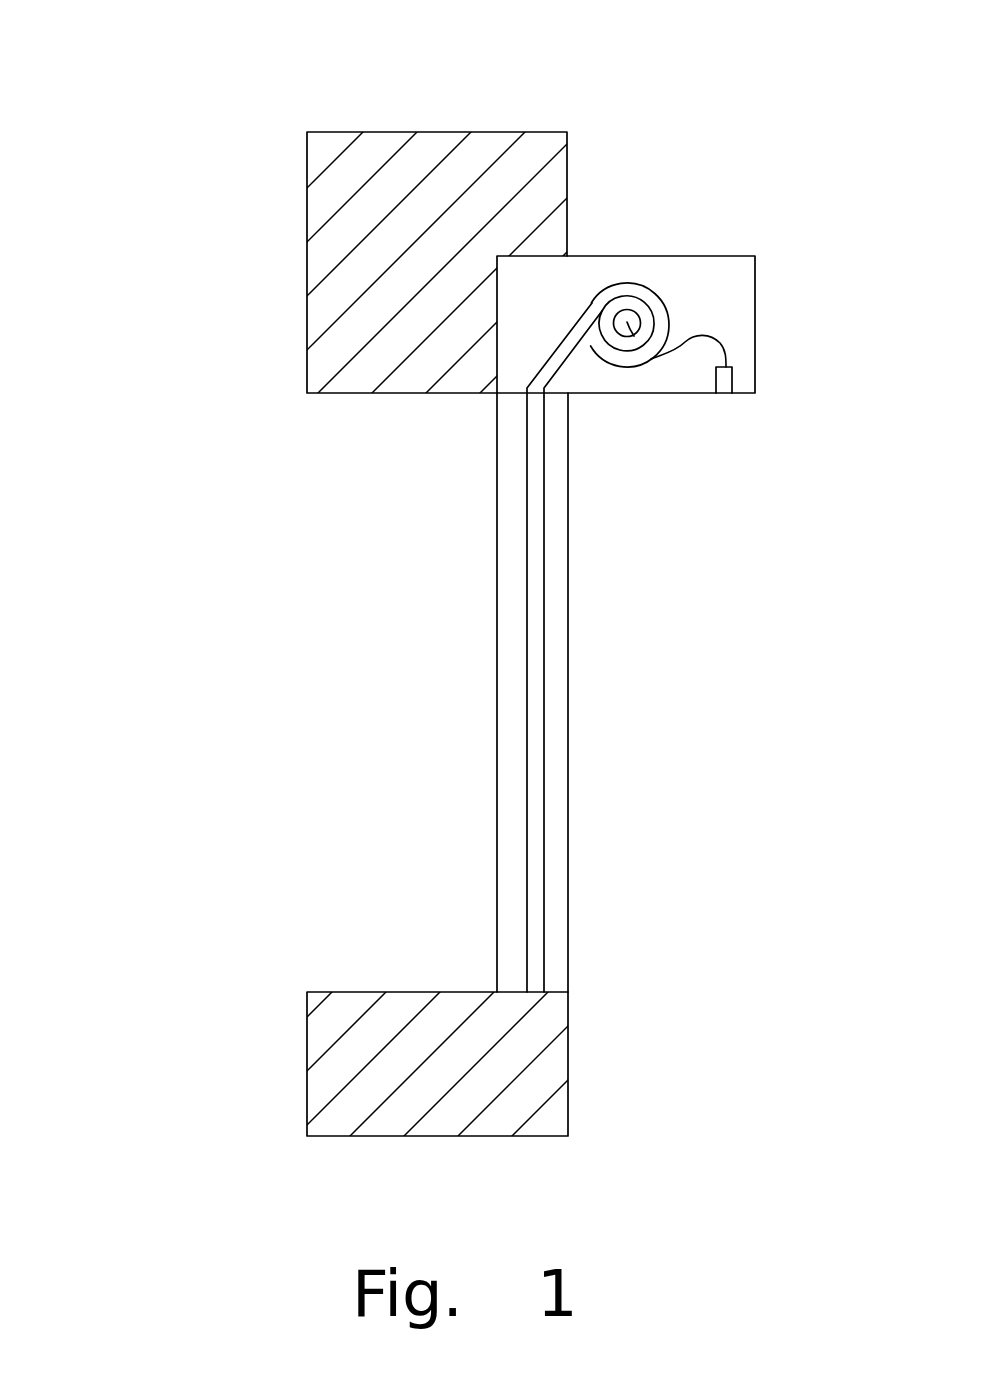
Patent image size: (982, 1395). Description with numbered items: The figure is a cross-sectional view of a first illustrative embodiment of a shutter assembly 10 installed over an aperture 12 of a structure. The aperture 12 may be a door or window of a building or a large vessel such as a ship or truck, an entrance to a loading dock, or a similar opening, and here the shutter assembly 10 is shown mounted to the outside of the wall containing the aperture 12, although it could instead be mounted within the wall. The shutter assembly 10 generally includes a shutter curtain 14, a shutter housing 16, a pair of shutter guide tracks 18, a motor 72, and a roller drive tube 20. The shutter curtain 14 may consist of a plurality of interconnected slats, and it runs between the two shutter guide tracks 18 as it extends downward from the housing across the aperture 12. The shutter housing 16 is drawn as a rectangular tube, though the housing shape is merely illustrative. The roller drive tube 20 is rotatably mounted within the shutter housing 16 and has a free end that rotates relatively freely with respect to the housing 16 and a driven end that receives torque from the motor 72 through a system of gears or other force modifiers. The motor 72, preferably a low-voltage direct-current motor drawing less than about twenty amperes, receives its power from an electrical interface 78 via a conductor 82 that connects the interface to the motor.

The shutter assembly 10 is at (448, 571).
The aperture 12 is at (284, 918).
The shutter curtain 14 is at (534, 686).
The shutter housing 16 is at (755, 300).
The shutter guide tracks 18 is at (497, 473).
The roller drive tube 20 is at (622, 283).
The motor 72 is at (636, 314).
The electrical interface 78 is at (720, 379).
The conductor 82 is at (675, 352).